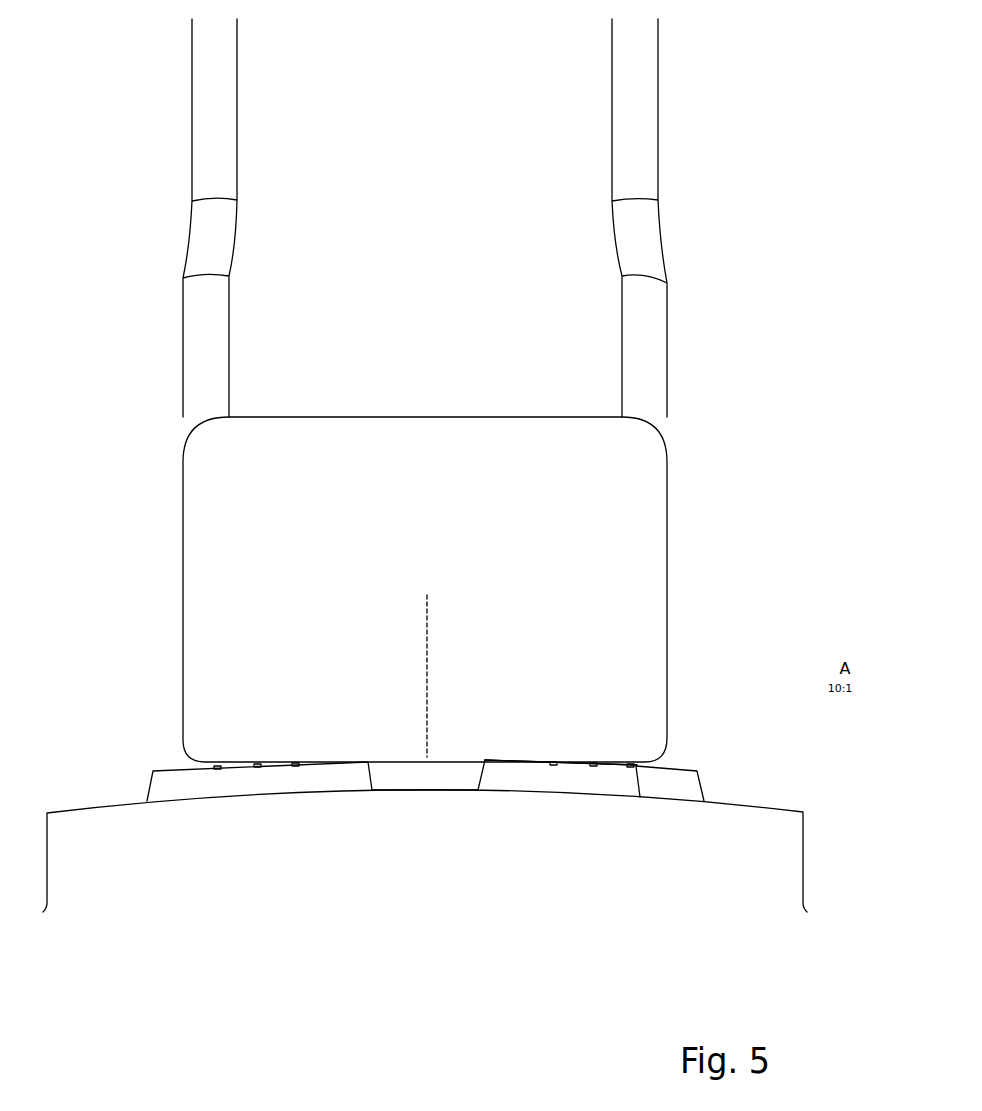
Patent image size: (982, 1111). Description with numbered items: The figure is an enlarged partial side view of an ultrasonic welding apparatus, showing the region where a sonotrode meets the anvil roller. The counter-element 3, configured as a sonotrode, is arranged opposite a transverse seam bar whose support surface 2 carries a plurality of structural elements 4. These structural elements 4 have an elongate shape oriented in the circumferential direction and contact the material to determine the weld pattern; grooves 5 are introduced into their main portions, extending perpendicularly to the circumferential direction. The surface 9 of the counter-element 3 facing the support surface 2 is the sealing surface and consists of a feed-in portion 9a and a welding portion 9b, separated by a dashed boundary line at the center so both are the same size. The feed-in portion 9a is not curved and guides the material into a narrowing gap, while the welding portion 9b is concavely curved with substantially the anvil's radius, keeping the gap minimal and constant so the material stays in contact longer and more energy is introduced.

The support surface 2 is at (849, 808).
The counter-element 3 is at (607, 487).
The structural elements 4 is at (174, 782).
The grooves 5 is at (638, 766).
The surface 9 is at (402, 752).
The feed-in portion 9a is at (561, 743).
The welding portion 9b is at (264, 744).